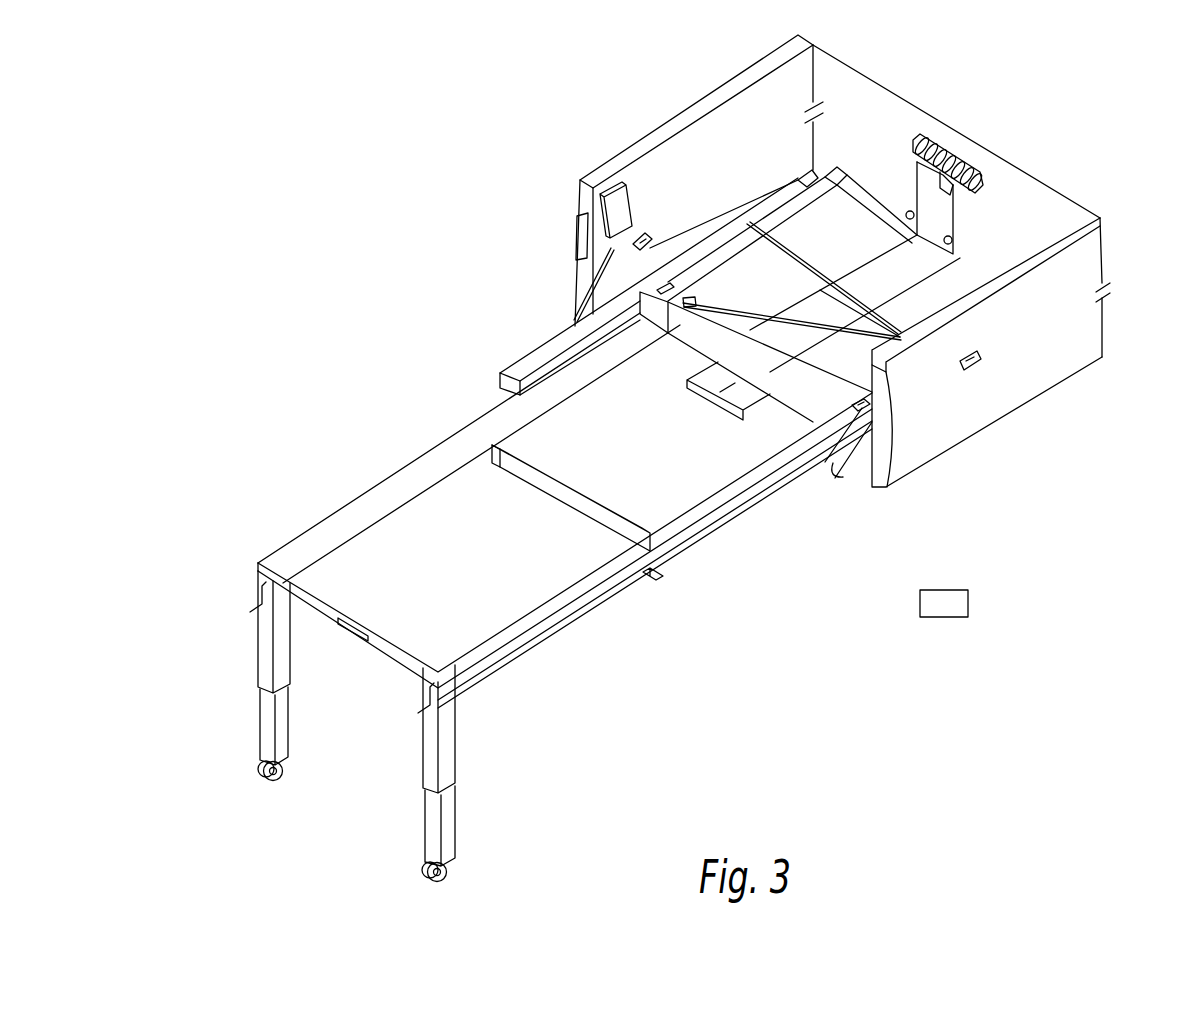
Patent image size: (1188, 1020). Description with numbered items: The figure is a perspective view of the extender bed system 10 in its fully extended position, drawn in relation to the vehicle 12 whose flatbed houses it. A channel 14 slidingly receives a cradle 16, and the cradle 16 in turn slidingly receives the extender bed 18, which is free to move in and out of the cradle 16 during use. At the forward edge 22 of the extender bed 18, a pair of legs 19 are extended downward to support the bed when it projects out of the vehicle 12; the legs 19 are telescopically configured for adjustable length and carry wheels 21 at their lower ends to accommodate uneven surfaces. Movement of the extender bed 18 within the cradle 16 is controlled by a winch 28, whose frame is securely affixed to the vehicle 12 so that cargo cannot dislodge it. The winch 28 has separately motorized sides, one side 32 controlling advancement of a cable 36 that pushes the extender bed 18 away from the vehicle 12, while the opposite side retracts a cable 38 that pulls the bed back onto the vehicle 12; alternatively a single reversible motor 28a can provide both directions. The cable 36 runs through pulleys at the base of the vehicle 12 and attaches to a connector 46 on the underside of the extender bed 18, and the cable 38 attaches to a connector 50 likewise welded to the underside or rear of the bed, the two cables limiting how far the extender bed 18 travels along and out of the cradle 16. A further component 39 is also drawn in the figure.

The extender bed system 10 is at (362, 202).
The vehicle 12 is at (978, 353).
The channel 14 is at (862, 480).
The cradle 16 is at (723, 517).
The extender bed 18 is at (490, 585).
The legs 19 is at (258, 656).
The wheels 21 is at (447, 877).
The forward edge 22 is at (357, 640).
The winch 28 is at (912, 140).
The reversible motor 28a is at (970, 206).
The side 32 is at (645, 232).
The cable 36 is at (885, 255).
The cable 38 is at (920, 286).
The controller box 39 is at (946, 600).
The connector 46 is at (743, 357).
The connector 50 is at (760, 418).